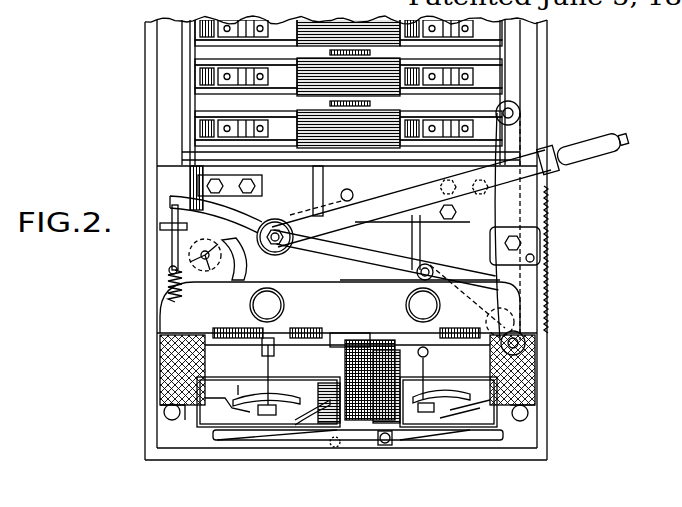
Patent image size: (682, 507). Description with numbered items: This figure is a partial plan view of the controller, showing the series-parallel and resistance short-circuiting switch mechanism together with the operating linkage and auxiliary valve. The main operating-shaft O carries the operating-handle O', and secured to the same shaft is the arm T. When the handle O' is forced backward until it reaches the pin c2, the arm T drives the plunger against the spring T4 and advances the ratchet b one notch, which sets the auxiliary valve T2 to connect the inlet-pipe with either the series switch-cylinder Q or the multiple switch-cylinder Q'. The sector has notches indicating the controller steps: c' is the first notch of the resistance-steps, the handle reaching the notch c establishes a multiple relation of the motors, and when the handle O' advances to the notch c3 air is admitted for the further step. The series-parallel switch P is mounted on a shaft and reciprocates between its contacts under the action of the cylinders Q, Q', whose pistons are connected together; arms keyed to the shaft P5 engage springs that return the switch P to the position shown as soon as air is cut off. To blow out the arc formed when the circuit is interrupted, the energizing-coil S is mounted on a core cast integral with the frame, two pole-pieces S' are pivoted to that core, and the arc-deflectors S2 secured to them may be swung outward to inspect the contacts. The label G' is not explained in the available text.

The grid or armature units G' is at (304, 79).
The arm T is at (180, 203).
The auxiliary valve T2 is at (238, 273).
The spring T4 is at (180, 293).
The ratchet b is at (236, 276).
The main operating-shaft O is at (275, 218).
The operating-handle O' is at (593, 163).
The shaft P5 is at (268, 300).
The series switch-cylinder Q is at (230, 318).
The multiple switch-cylinder Q' is at (330, 322).
The notch c is at (569, 259).
The first notch of the resistance-steps c' is at (561, 174).
The pin c2 is at (510, 114).
The notch c3 is at (537, 327).
The energizing-coil S is at (359, 418).
The pole-pieces S' is at (358, 464).
The arc-deflectors S2 is at (207, 427).
The series-parallel switch P is at (270, 413).